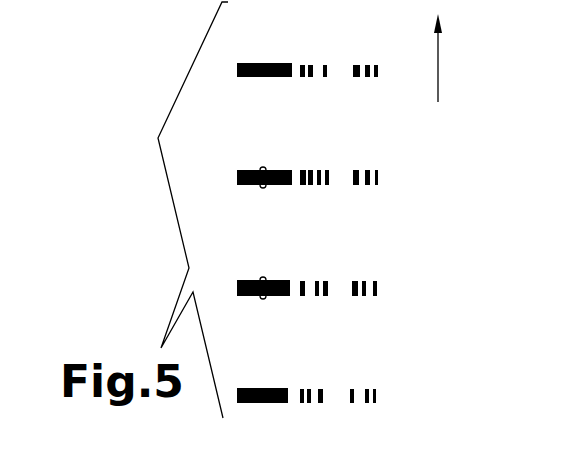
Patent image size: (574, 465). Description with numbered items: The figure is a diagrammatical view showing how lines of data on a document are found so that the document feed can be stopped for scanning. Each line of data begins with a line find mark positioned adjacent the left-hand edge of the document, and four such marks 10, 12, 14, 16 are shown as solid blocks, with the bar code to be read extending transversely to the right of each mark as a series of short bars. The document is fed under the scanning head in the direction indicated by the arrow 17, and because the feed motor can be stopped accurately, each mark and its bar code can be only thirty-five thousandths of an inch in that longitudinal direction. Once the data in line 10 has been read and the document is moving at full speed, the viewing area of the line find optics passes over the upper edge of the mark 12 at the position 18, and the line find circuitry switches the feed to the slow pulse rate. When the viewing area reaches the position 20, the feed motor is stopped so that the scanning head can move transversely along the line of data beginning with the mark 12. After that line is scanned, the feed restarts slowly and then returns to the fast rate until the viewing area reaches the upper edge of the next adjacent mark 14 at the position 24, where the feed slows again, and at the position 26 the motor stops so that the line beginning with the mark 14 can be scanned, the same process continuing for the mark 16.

The line find mark 10 is at (250, 62).
The line find mark 12 is at (237, 178).
The line find mark 14 is at (243, 297).
The line find mark 16 is at (262, 388).
The arrow 17 is at (439, 61).
The upper edge position of mark 12 18 is at (265, 168).
The stop position at mark 12 20 is at (264, 188).
The upper edge position of mark 14 24 is at (265, 277).
The stop position at mark 14 26 is at (264, 299).